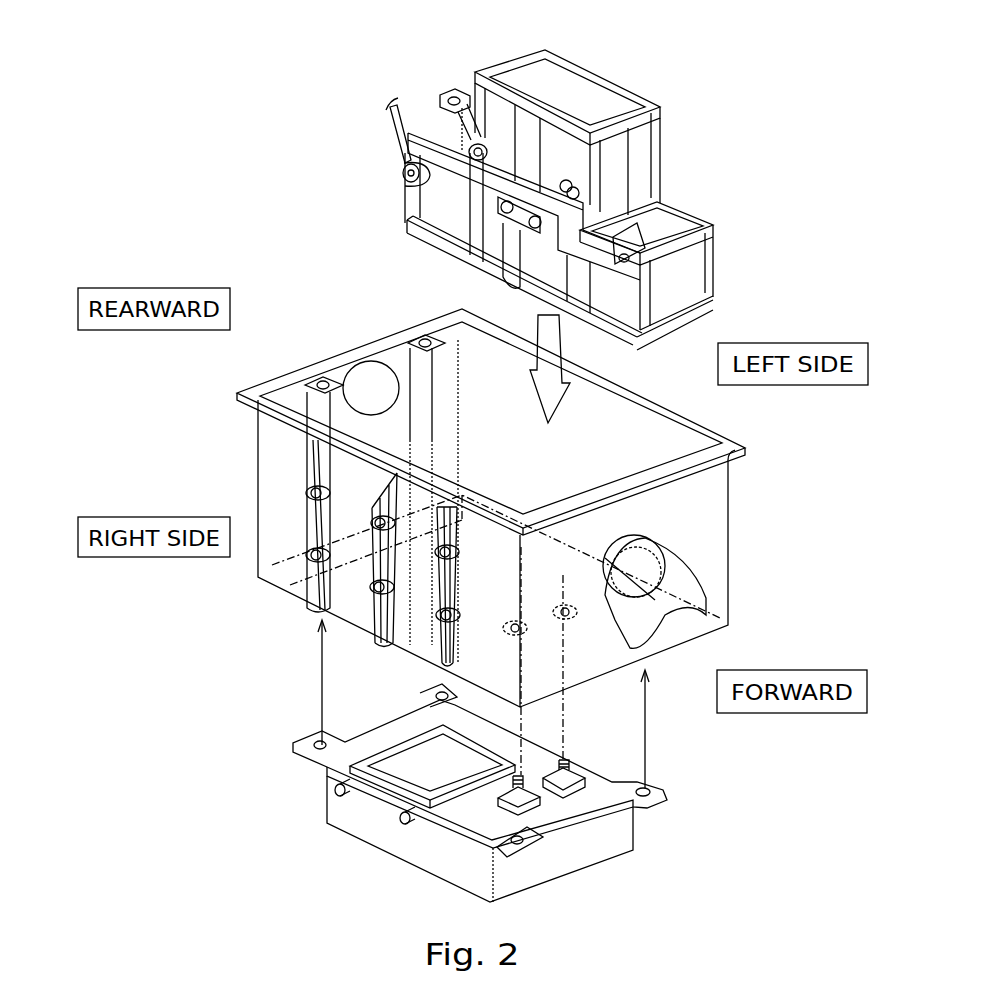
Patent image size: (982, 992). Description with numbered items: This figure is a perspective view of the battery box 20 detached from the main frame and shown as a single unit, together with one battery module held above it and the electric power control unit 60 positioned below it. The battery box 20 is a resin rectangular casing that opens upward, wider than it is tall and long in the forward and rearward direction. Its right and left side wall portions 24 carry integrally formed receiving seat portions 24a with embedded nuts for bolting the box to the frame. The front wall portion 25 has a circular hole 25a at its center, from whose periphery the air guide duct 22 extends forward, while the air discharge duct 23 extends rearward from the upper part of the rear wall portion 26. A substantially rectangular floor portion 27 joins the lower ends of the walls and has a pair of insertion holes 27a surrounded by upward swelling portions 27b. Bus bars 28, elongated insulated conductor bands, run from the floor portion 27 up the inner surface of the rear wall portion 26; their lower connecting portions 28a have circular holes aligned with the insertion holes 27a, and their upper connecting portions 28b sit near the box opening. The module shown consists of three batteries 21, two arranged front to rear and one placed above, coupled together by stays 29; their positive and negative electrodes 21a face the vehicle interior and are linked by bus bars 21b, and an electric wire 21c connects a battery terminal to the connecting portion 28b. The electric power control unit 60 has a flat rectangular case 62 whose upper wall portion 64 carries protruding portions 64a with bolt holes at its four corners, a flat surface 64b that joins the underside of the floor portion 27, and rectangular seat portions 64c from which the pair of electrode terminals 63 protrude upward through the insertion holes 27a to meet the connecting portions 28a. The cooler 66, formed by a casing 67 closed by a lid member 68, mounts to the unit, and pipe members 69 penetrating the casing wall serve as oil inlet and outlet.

The battery box 20 is at (385, 302).
The battery 21 is at (582, 95).
The positive and negative electrodes 21a is at (480, 146).
The bus bar 21b is at (448, 94).
The electric wire 21c is at (388, 123).
The air guide duct 22 is at (700, 587).
The air discharge duct 23 is at (290, 330).
The side wall portion 24 is at (650, 430).
The receiving seat portion 24a is at (305, 492).
The front wall portion 25 is at (692, 573).
The circular hole 25a is at (650, 540).
The rear wall portion 26 is at (273, 383).
The floor portion 27 is at (539, 620).
The insertion hole 27a is at (518, 620).
The swelling portion 27b is at (543, 616).
The bus bar 28 is at (453, 469).
The connecting portion 28a is at (384, 350).
The connecting portion 28b is at (325, 375).
The stay 29 is at (630, 106).
The electric power control unit 60 is at (246, 745).
The case 62 is at (322, 780).
The electrode terminal 63 is at (566, 758).
The upper wall portion 64 is at (492, 786).
The protruding portion 64a is at (305, 742).
The flat surface 64b is at (607, 773).
The seat portion 64c is at (505, 805).
The cooler 66 is at (446, 813).
The casing 67 is at (390, 813).
The lid member 68 is at (413, 770).
The pipe member 69 is at (336, 790).